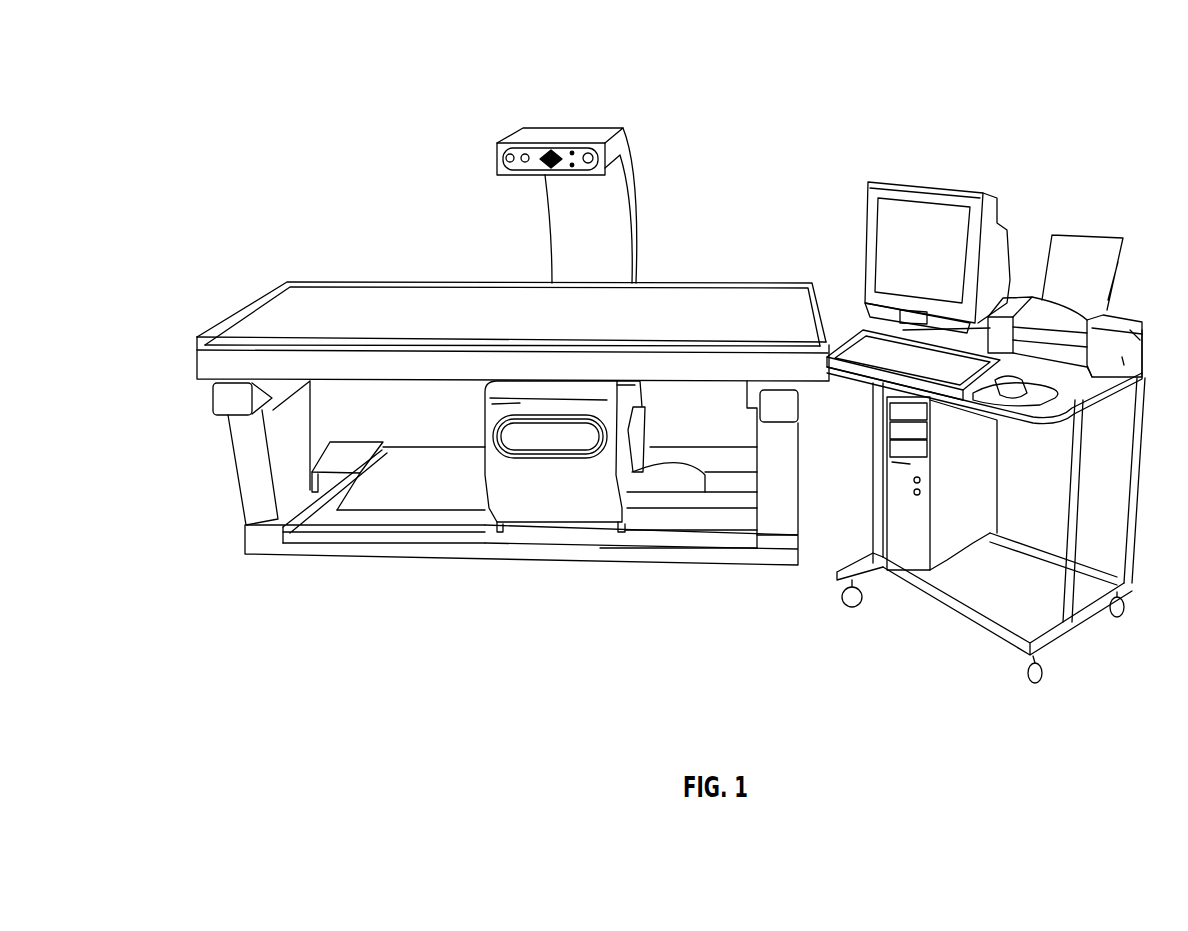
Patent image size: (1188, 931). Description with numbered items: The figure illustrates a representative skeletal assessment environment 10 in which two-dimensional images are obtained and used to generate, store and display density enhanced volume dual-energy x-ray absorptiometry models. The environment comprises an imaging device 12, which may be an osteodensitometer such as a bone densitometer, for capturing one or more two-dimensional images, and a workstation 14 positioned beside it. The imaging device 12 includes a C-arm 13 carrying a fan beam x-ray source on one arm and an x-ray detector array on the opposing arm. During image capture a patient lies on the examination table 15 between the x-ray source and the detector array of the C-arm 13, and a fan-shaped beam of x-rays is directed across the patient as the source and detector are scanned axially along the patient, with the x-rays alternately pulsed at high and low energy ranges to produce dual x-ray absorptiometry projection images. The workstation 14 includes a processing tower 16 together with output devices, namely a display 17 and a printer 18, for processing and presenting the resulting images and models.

The skeletal assessment environment 10 is at (345, 147).
The imaging device 12 is at (297, 277).
The C-arm 13 is at (637, 179).
The workstation 14 is at (1038, 149).
The examination table 15 is at (227, 320).
The processing tower 16 is at (918, 558).
The display 17 is at (937, 181).
The printer 18 is at (1122, 327).